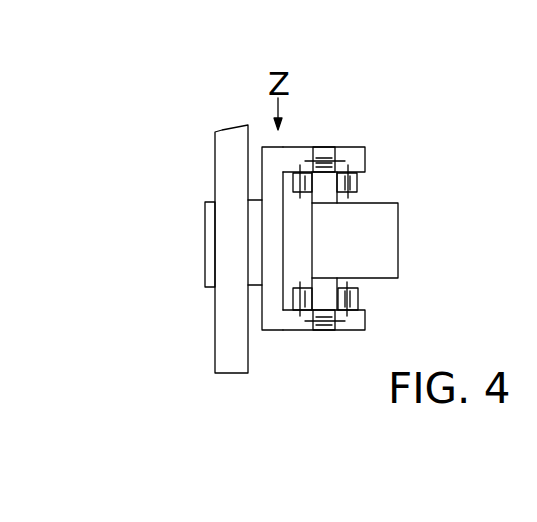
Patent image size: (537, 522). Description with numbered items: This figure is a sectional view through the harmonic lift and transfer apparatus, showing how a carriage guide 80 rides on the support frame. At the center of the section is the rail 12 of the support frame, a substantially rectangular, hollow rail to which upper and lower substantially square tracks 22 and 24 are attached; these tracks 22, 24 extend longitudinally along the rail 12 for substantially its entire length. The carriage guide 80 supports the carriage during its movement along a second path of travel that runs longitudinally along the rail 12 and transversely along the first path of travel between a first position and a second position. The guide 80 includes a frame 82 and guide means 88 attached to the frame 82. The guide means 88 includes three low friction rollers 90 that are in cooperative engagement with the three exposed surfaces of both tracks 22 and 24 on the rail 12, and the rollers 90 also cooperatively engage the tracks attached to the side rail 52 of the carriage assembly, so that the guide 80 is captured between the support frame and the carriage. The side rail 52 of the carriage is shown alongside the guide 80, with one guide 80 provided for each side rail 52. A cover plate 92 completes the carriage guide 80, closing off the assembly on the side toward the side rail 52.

The sectional rail 12 is at (398, 242).
The upper track 22 is at (332, 217).
The lower track 24 is at (336, 272).
The side rail 52 is at (222, 150).
The carriage guide 80 is at (146, 338).
The frame 82 is at (272, 155).
The guide means 88 is at (443, 130).
The low friction rollers 90 is at (291, 168).
The cover plate 92 is at (205, 248).